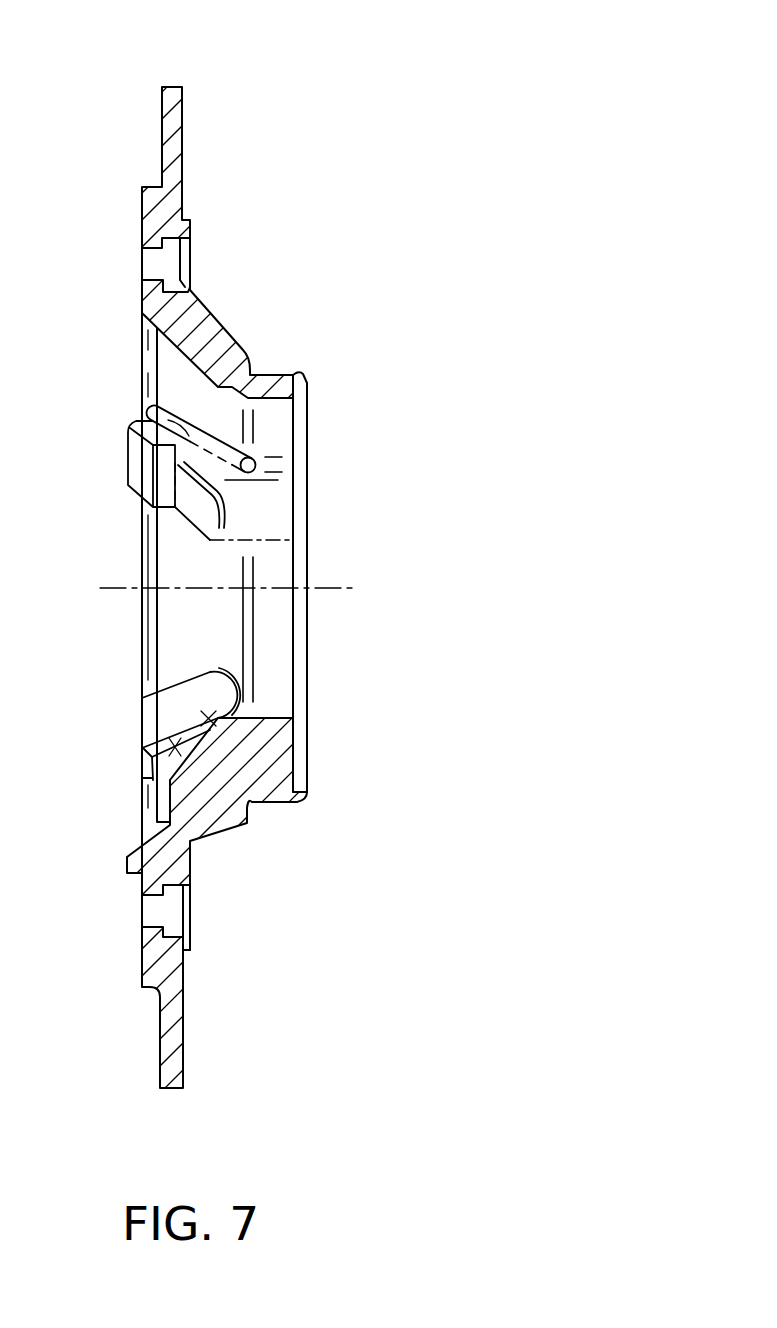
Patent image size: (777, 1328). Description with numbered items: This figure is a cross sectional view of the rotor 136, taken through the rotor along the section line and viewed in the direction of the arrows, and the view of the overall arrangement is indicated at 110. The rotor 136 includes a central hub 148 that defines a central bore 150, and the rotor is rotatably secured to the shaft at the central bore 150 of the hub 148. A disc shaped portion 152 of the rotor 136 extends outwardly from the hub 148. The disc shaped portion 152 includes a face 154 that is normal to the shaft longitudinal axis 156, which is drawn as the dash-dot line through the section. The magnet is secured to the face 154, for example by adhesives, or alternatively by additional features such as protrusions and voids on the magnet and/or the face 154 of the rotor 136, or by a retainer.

The bearing assembly 110 is at (327, 82).
The rotor 136 is at (322, 188).
The central hub 148 is at (303, 373).
The central bore 150 is at (282, 402).
The disc shaped portion 152 is at (161, 128).
The face 154 is at (184, 150).
The shaft longitudinal axis 156 is at (340, 588).